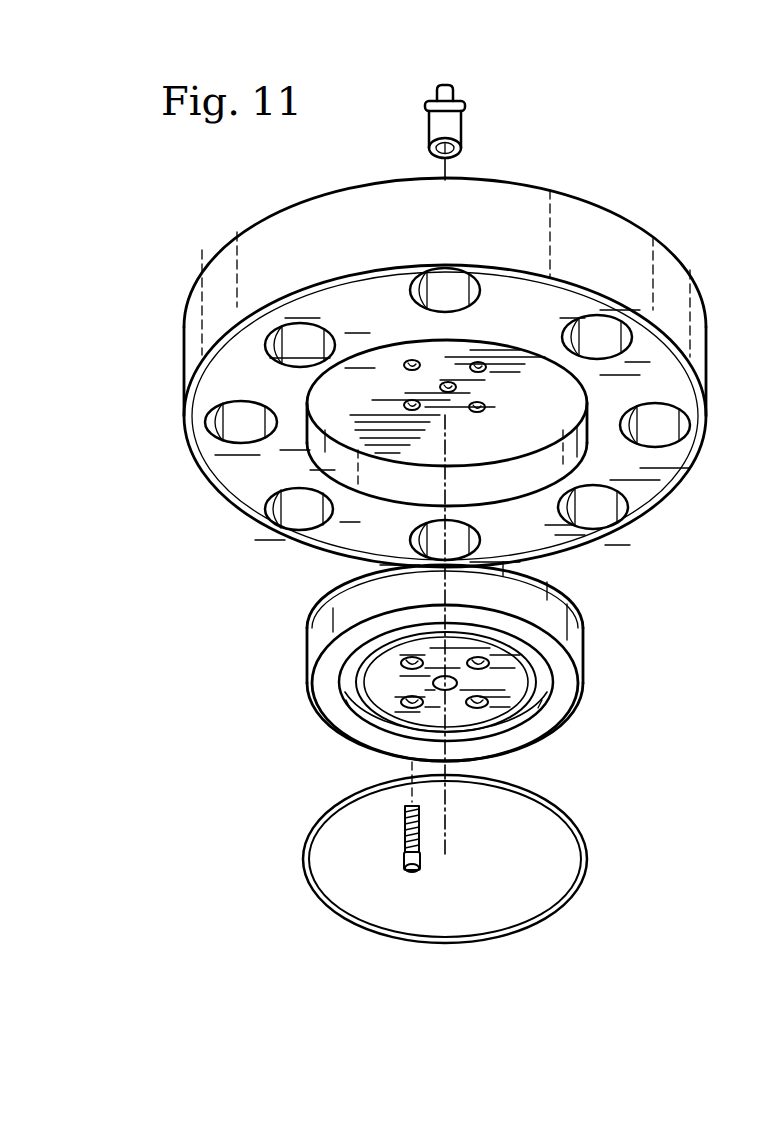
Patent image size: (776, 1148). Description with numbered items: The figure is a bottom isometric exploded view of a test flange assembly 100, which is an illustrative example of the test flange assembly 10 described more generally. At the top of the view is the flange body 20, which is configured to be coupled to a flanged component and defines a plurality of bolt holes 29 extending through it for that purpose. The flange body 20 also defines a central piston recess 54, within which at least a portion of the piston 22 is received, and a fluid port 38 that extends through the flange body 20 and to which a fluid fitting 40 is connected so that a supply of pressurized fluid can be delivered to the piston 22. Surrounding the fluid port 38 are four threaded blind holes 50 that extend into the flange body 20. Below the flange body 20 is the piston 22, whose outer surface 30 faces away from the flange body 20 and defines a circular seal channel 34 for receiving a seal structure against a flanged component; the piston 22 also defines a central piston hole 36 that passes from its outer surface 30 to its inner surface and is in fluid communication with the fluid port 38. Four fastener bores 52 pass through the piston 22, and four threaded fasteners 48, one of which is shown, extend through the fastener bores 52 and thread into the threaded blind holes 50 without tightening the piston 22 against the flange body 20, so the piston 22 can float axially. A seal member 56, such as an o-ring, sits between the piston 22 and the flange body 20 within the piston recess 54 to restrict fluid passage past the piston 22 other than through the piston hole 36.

The test flange assembly 10 is at (732, 110).
The test flange assembly 100 is at (663, 141).
The flange body 20 is at (183, 365).
The piston 22 is at (305, 660).
The bolt holes 29 is at (292, 338).
The outer surface 30 is at (375, 696).
The circular seal channel 34 is at (352, 666).
The piston hole 36 is at (452, 690).
The fluid port 38 is at (460, 391).
The fluid fitting 40 is at (464, 116).
The threaded fasteners 48 is at (404, 840).
The threaded blind holes 50 is at (469, 407).
The fastener bores 52 is at (474, 697).
The piston recess 54 is at (347, 448).
The seal member 56 is at (303, 858).